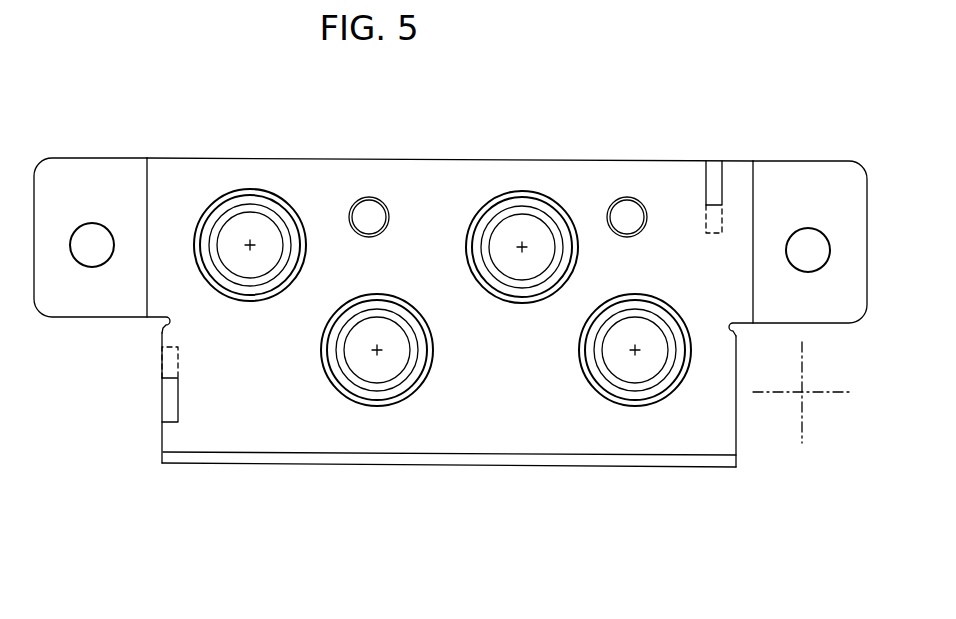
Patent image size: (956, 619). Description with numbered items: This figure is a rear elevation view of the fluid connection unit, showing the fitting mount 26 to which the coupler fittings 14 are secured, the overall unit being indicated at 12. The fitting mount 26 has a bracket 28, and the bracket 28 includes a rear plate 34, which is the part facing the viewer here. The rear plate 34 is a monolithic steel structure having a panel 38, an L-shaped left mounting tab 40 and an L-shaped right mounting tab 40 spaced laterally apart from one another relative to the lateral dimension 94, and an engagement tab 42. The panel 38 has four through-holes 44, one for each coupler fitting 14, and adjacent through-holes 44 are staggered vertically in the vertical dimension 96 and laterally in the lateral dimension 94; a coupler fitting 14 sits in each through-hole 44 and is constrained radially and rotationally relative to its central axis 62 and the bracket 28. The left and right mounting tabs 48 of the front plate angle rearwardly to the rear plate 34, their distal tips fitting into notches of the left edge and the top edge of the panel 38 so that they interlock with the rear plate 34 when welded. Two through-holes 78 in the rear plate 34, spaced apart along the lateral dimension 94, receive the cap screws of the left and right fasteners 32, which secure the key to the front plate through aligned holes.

The battery module assembly 12 is at (202, 85).
The fitting mount 26 is at (627, 87).
The bracket 28 is at (313, 158).
The panel 38 is at (450, 173).
The mounting tab 40 is at (107, 168).
The through-hole 44 is at (254, 190).
The coupler fitting 14 is at (258, 295).
The central axis 62 is at (250, 245).
The through-hole 78 is at (370, 217).
The fastener 32 is at (377, 218).
The mounting tab 48 is at (713, 160).
The rear plate 34 is at (715, 423).
The engagement tab 42 is at (540, 460).
The lateral dimension 94 is at (815, 390).
The vertical dimension 96 is at (805, 405).